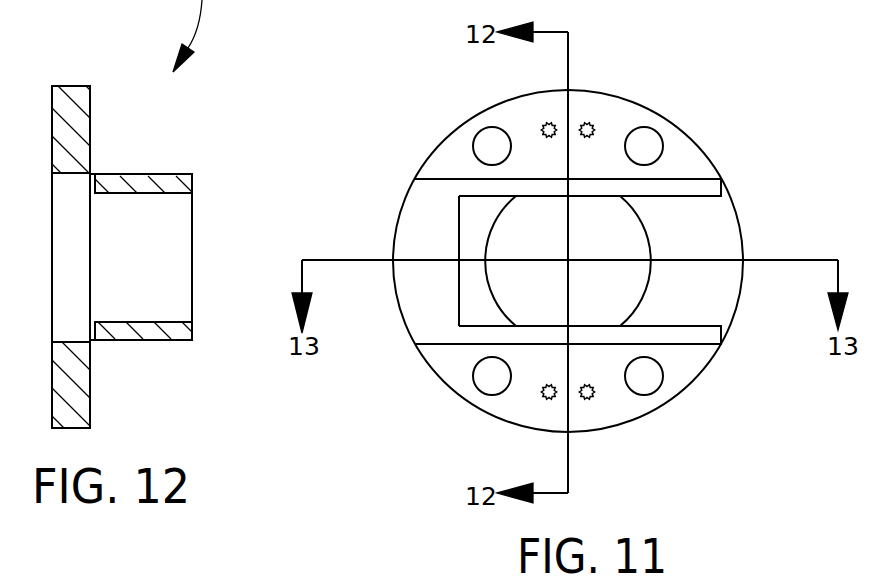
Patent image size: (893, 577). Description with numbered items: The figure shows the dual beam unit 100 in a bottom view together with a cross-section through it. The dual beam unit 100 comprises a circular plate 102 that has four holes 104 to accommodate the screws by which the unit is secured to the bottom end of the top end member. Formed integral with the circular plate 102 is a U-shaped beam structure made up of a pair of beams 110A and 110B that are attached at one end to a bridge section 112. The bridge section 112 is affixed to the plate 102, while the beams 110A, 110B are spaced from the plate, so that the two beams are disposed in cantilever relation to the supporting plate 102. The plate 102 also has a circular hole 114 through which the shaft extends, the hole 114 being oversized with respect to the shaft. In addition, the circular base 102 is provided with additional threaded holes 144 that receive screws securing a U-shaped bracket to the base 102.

In FIG. 12, the dual beam unit 100 is at (127, 214).
In FIG. 11, the dual beam unit 100 is at (690, 106).
In FIG. 12, the circular plate 102 is at (63, 86).
In FIG. 11, the circular plate 102 is at (455, 363).
In FIG. 11, the holes 104 is at (487, 127).
In FIG. 12, the beam 110A is at (152, 173).
In FIG. 11, the beam 110A is at (670, 178).
In FIG. 12, the beam 110B is at (173, 340).
In FIG. 11, the beam 110B is at (670, 327).
In FIG. 12, the bridge section 112 is at (68, 255).
In FIG. 11, the bridge section 112 is at (435, 238).
In FIG. 12, the circular hole 114 is at (73, 342).
In FIG. 11, the circular hole 114 is at (650, 247).
In FIG. 11, the threaded holes 144 is at (590, 122).